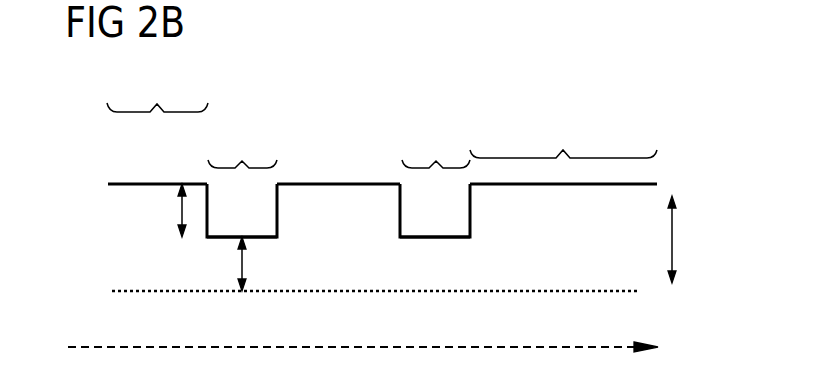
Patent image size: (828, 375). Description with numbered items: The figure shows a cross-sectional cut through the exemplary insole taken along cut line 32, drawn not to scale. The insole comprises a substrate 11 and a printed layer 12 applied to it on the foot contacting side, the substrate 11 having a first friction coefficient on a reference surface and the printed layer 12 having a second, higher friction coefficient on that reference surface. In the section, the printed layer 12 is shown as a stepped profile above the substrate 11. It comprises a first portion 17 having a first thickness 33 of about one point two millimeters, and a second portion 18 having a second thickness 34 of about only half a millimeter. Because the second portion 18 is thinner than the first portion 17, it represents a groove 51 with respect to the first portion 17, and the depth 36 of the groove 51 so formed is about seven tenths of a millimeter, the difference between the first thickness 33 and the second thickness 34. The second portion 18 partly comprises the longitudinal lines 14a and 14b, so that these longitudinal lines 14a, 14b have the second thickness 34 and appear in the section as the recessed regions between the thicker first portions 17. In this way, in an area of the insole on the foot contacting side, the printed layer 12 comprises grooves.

The substrate 11 is at (343, 291).
The printed layer 12 is at (296, 183).
The longitudinal line 14a is at (232, 198).
The longitudinal line 14b is at (426, 199).
The groove 51 is at (322, 181).
The first portion 17 is at (382, 114).
The second portion 18 is at (339, 146).
The cut line 32 is at (86, 347).
The first thickness 33 is at (672, 238).
The second thickness 34 is at (242, 263).
The depth 36 is at (182, 210).